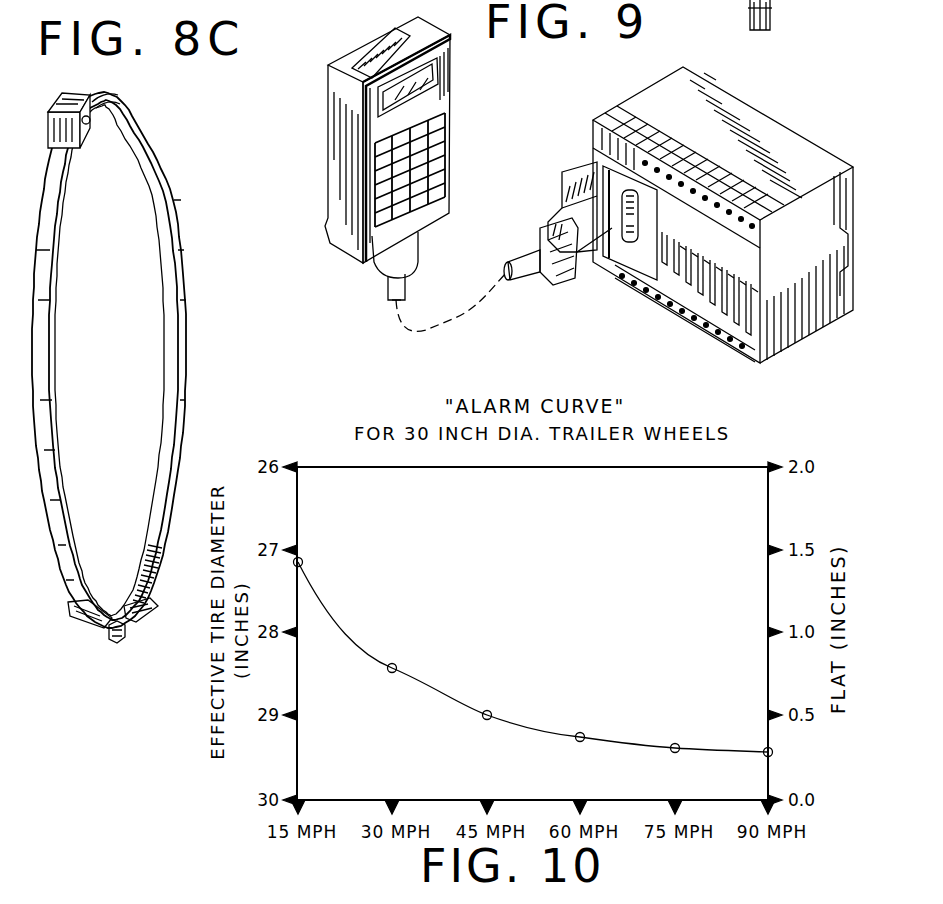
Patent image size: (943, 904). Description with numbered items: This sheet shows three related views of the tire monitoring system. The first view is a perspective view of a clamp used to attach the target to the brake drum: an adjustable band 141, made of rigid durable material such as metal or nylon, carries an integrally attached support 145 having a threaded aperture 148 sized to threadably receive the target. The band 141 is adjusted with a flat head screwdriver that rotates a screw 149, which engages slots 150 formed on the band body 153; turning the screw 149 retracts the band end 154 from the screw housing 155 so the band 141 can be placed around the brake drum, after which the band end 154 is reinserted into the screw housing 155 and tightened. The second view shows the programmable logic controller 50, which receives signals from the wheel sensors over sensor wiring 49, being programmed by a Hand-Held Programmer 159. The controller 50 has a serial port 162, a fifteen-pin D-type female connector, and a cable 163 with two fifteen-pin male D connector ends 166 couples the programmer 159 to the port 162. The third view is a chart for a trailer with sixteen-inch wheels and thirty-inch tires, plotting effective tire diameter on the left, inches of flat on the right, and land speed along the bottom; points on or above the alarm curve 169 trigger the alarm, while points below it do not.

In FIG. 8C, the band 141 is at (194, 303).
In FIG. 8C, the support 145 is at (86, 150).
In FIG. 8C, the threaded aperture 148 is at (100, 96).
In FIG. 8C, the screw 149 is at (114, 646).
In FIG. 8C, the slots 150 is at (148, 556).
In FIG. 8C, the band body 153 is at (186, 360).
In FIG. 8C, the band end 154 is at (72, 618).
In FIG. 8C, the screw housing 155 is at (132, 628).
In FIG. 9, the Hand-Held Programmer 159 is at (370, 48).
In FIG. 9, the serial port 162 is at (592, 152).
In FIG. 9, the cable 163 is at (460, 311).
In FIG. 9, the 15-pin male D connector ends 166 is at (406, 248).
In FIG. 9, the programmable logic controller 50 is at (758, 101).
In FIG. 9, the sensor wiring 49 is at (774, 22).
In FIG. 10, the alarm curve 169 is at (446, 700).